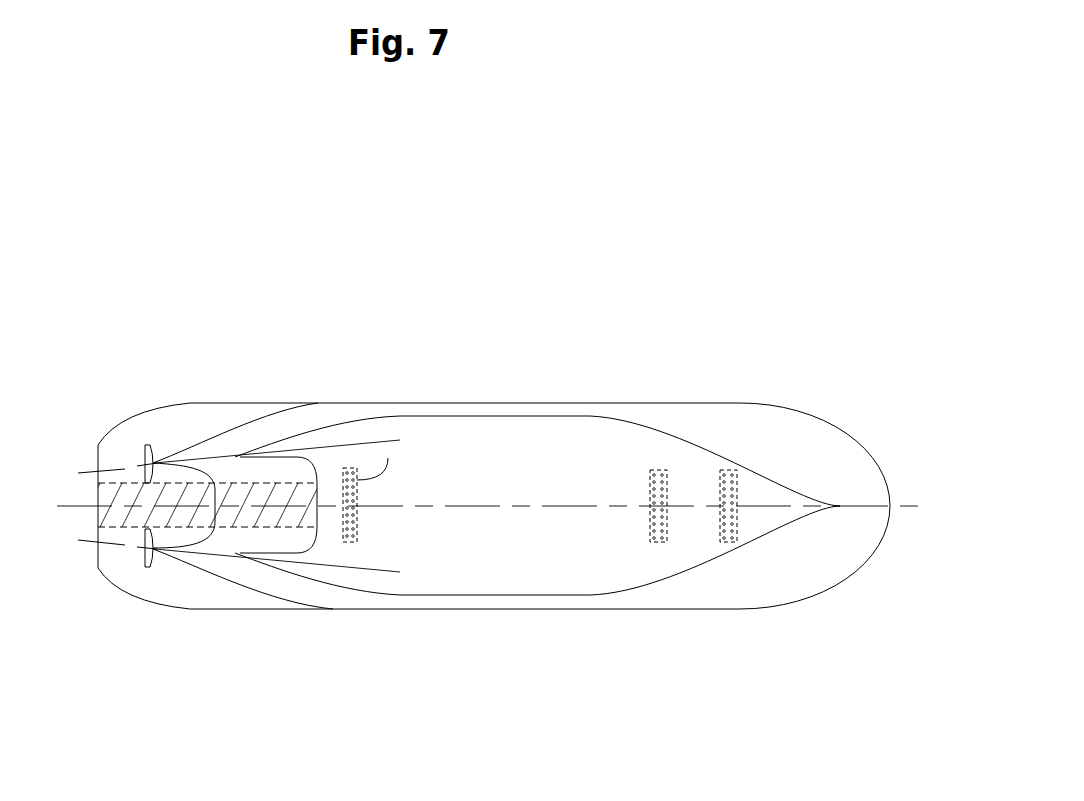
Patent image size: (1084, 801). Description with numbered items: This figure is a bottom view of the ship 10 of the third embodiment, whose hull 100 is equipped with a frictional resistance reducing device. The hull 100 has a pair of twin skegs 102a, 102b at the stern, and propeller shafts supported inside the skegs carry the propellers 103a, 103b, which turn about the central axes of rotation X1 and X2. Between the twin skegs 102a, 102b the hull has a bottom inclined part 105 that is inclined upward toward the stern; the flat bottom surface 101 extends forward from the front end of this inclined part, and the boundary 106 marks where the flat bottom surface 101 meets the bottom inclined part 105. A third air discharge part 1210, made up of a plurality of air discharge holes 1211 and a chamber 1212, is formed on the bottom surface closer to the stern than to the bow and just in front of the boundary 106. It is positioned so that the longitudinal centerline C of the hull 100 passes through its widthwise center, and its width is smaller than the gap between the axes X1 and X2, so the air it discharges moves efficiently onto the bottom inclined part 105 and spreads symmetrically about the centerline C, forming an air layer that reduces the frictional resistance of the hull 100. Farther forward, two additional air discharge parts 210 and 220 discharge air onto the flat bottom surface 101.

The ship 10 is at (66, 152).
The hull 100 is at (753, 378).
The flat bottom surface 101 is at (510, 580).
The skeg 102a is at (235, 433).
The skeg 102b is at (233, 580).
The propeller 103a is at (150, 445).
The propeller 103b is at (148, 567).
The bottom inclined part 105 is at (260, 493).
The boundary 106 is at (320, 518).
The third air discharge part 1210 is at (392, 330).
The air discharge holes 1211 is at (355, 468).
The chamber 1212 is at (388, 458).
The first air discharge part 210 is at (728, 565).
The second air discharge part 220 is at (657, 565).
The central axis of rotation X1 is at (106, 472).
The central axis of rotation X2 is at (106, 539).
The longitudinal centerline C is at (504, 506).